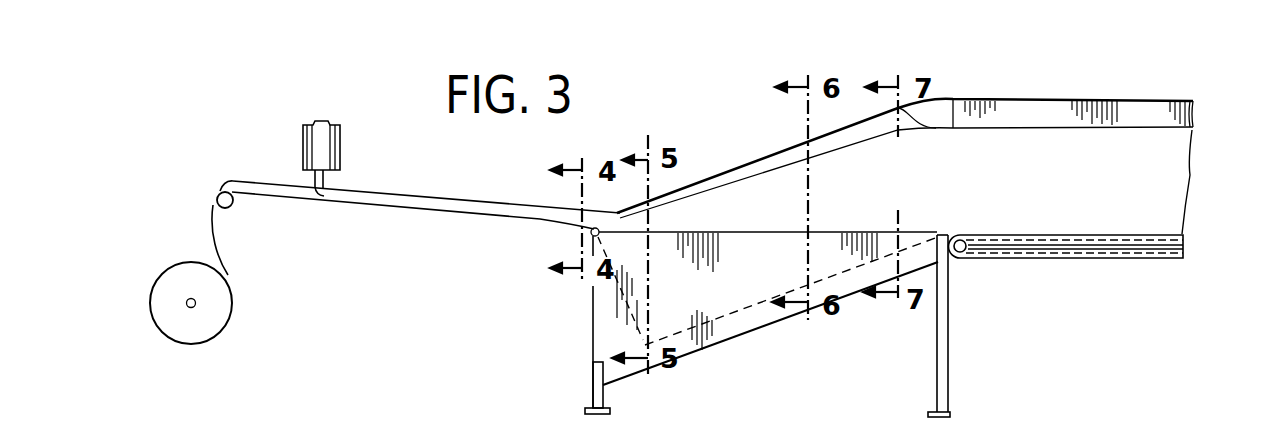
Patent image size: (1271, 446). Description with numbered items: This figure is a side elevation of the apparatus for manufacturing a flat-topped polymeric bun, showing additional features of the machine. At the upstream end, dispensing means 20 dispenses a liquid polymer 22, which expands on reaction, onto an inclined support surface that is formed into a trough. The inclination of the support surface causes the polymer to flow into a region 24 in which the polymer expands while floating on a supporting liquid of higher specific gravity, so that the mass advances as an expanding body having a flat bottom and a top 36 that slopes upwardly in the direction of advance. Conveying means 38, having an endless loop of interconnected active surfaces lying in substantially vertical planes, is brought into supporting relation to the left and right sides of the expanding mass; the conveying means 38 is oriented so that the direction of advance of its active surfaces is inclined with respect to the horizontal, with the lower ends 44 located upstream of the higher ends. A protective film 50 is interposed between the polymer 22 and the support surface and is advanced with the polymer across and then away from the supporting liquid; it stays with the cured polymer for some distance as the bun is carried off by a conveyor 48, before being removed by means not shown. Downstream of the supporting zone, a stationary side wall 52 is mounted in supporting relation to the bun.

The dispensing means 20 is at (307, 150).
The liquid polymer 22 is at (373, 197).
The region 24 is at (744, 218).
The top 36 is at (1180, 176).
The conveying means 38 is at (768, 146).
The lower ends 44 is at (617, 288).
The conveyor 48 is at (1104, 260).
The protective film 50 is at (212, 233).
The stationary side wall 52 is at (1196, 115).